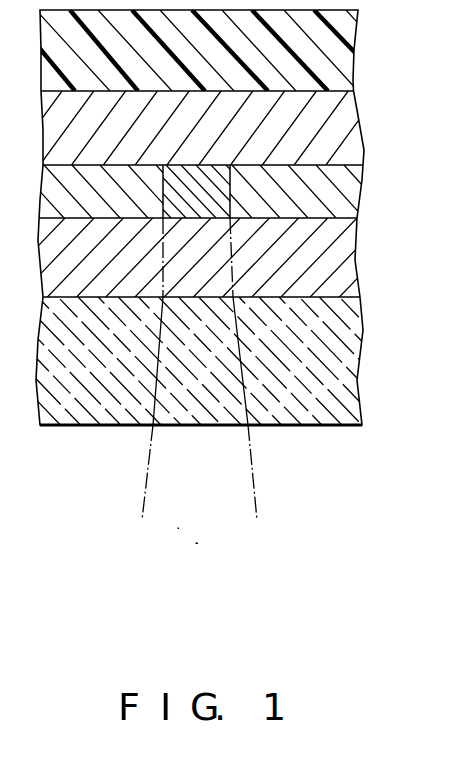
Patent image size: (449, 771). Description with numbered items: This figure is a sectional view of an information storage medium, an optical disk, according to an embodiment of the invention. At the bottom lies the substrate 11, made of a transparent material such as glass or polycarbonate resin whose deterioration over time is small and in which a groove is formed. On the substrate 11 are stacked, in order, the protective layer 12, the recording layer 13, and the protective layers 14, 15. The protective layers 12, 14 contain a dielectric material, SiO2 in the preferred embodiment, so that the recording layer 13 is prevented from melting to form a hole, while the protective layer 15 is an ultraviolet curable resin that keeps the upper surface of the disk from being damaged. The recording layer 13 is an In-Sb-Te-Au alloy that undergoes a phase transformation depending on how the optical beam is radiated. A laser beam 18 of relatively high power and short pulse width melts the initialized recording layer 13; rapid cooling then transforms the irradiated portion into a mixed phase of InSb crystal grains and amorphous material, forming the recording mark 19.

The substrate 11 is at (362, 333).
The protective layer 12 is at (354, 266).
The recording layer 13 is at (362, 171).
The protective layer 14 is at (360, 121).
The protective layer 15 is at (353, 49).
The laser beam 18 is at (255, 484).
The recording mark 19 is at (227, 200).